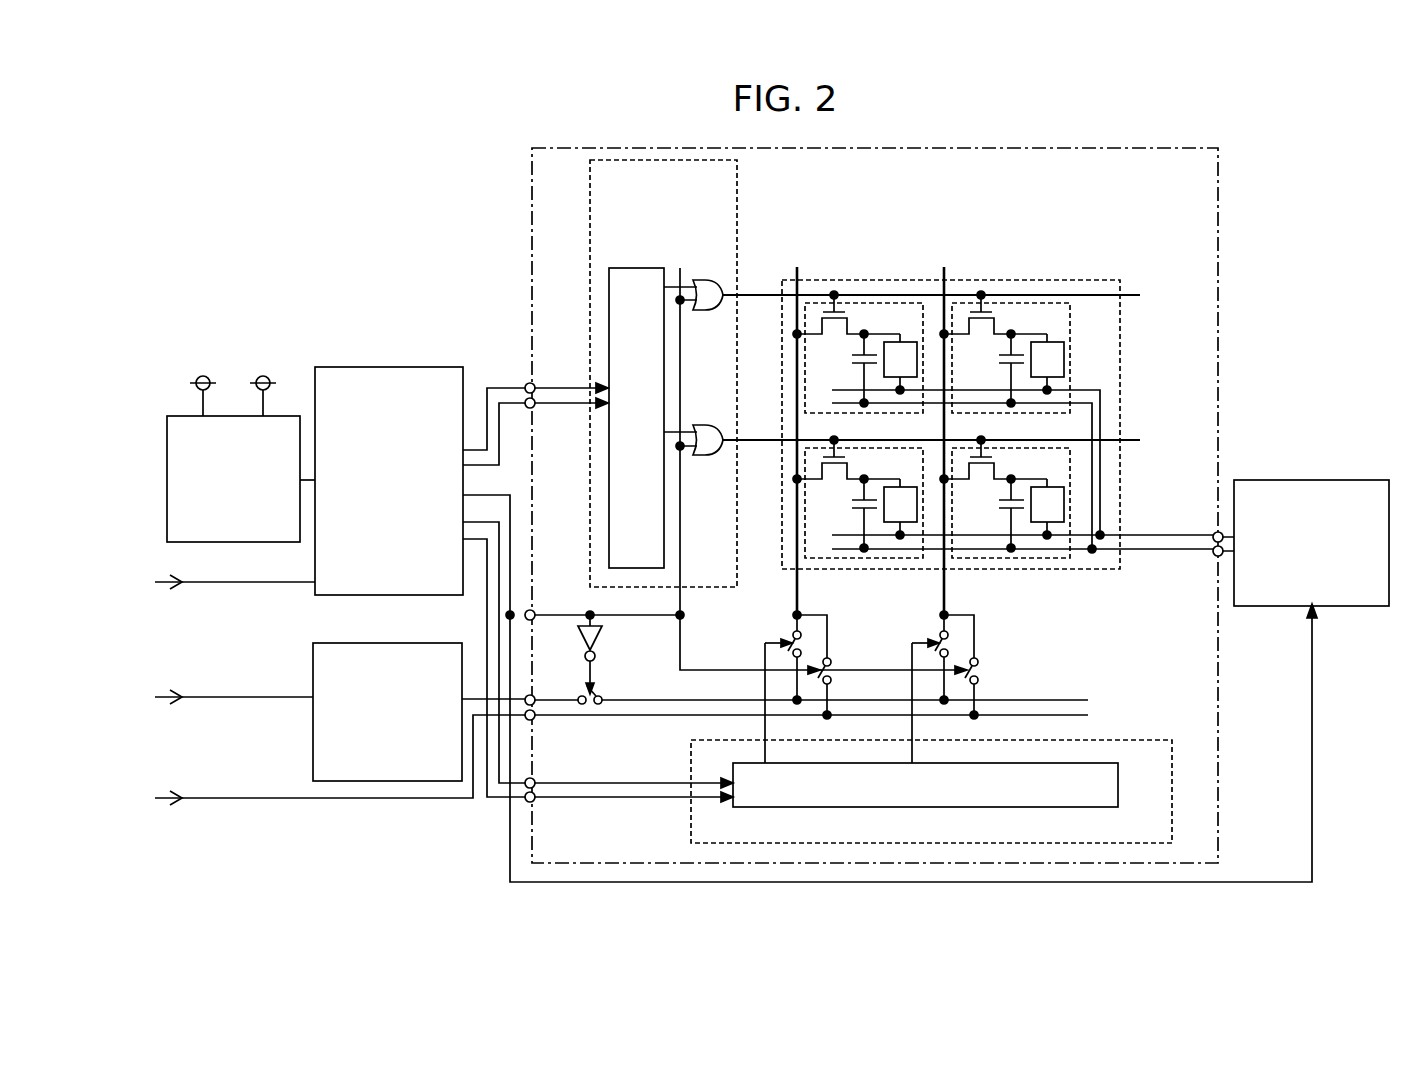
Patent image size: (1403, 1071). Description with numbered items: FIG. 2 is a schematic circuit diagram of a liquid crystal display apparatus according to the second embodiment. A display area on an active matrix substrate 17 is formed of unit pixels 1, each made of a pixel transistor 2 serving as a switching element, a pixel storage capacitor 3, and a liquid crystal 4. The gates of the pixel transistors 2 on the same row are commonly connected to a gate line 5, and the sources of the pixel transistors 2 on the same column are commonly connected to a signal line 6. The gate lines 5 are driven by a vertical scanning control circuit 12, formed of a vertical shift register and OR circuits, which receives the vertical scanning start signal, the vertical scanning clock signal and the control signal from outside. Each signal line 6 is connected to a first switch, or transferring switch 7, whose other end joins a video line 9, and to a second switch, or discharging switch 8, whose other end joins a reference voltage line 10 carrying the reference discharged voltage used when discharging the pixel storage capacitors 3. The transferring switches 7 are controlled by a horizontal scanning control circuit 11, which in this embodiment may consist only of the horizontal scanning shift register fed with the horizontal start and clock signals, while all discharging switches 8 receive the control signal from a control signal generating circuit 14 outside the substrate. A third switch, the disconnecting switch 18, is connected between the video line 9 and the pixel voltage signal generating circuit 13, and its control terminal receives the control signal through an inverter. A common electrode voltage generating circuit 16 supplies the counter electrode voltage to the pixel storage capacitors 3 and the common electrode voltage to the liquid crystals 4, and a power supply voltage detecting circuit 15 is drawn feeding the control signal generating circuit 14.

The pixel 1 is at (920, 280).
The pixel transistor 2 is at (845, 312).
The pixel storage capacitor 3 is at (850, 358).
The liquid crystal 4 is at (900, 342).
The gate line 5 is at (1140, 295).
The signal line 6 is at (800, 268).
The first switch (transferring switch) 7 is at (801, 631).
The second switch (discharging switch) 8 is at (831, 658).
The video line 9 is at (1088, 700).
The reference voltage line 10 is at (1088, 715).
The horizontal scanning control circuit 11 is at (1172, 830).
The vertical scanning control circuit 12 is at (590, 177).
The pixel voltage signal generating circuit 13 is at (432, 643).
The control signal generating circuit 14 is at (437, 367).
The power-supply-voltage detecting circuit 15 is at (275, 416).
The common electrode voltage generating circuit 16 is at (1368, 480).
The active matrix substrate 17 is at (1218, 148).
The third switch (disconnecting switch) 18 is at (604, 690).